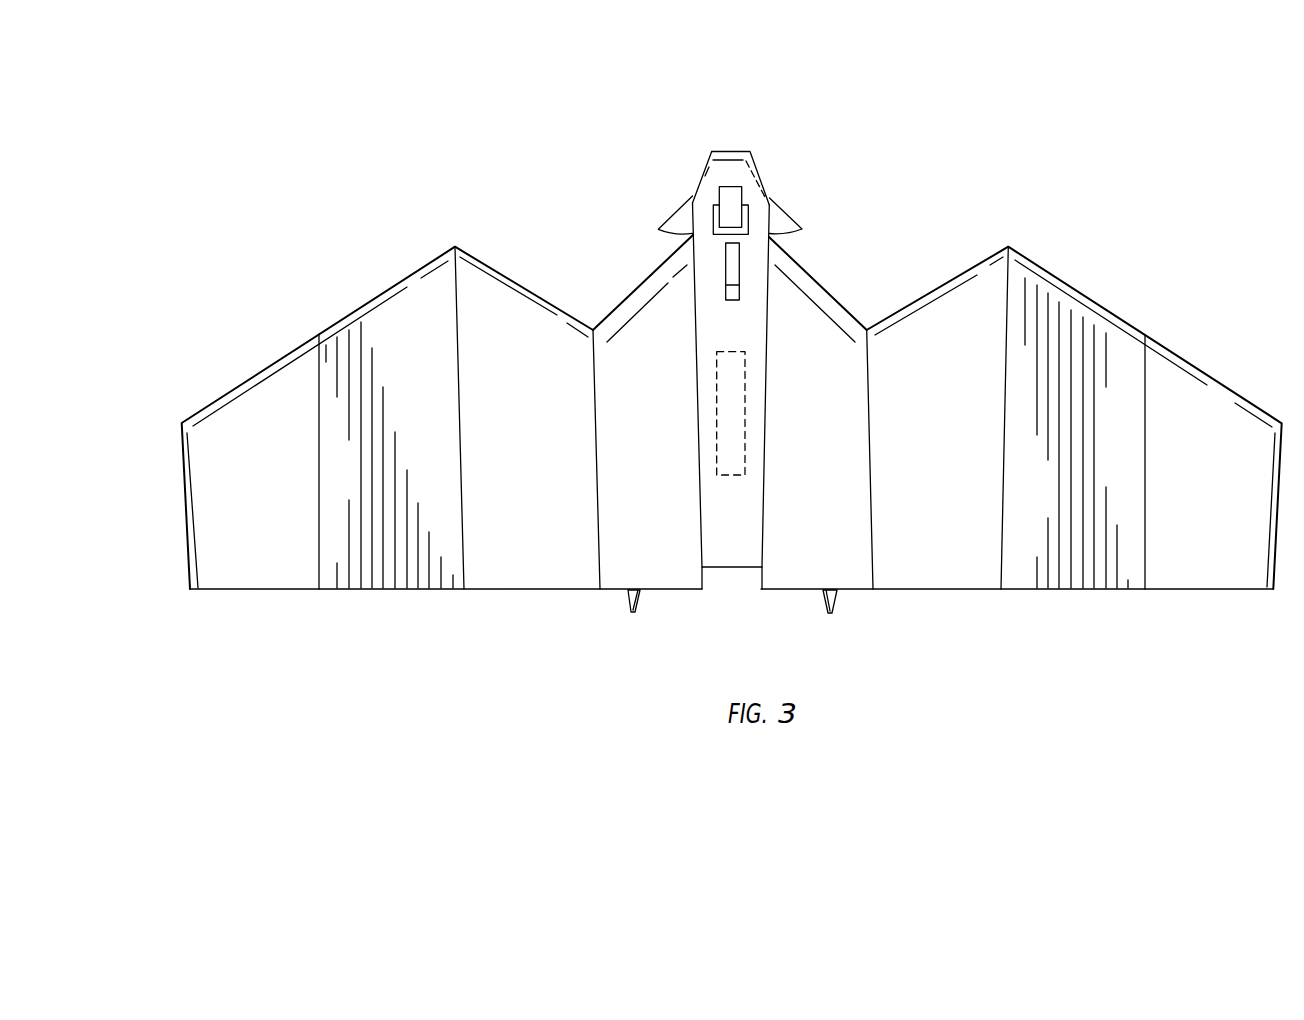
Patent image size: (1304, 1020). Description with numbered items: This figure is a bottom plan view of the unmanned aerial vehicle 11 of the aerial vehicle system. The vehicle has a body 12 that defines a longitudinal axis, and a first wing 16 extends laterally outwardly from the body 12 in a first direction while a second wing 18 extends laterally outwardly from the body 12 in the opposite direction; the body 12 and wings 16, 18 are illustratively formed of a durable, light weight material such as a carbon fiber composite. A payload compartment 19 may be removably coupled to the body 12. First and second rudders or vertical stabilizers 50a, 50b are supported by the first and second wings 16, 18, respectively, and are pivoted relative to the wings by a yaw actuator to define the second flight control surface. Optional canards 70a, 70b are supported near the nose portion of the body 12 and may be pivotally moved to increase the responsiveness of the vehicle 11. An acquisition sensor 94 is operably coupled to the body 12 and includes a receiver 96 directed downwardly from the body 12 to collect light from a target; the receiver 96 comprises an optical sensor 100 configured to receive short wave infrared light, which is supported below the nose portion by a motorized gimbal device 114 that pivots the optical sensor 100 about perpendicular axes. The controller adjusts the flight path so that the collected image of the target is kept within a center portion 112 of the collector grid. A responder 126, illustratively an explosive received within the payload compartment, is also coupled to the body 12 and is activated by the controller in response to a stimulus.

The unmanned aerial vehicle 11 is at (1043, 153).
The body 12 is at (800, 273).
The first wing 16 is at (242, 573).
The second wing 18 is at (1210, 583).
The payload compartment 19 is at (740, 515).
The first rudder 50a is at (627, 609).
The second rudder 50b is at (833, 613).
The canard 70a is at (667, 226).
The canard 70b is at (793, 213).
The acquisition sensor 94 is at (742, 173).
The receiver 96 is at (690, 194).
The optical sensor 100 is at (742, 190).
The center portion 112 is at (726, 557).
The gimbal device 114 is at (742, 218).
The responder 126 is at (748, 438).